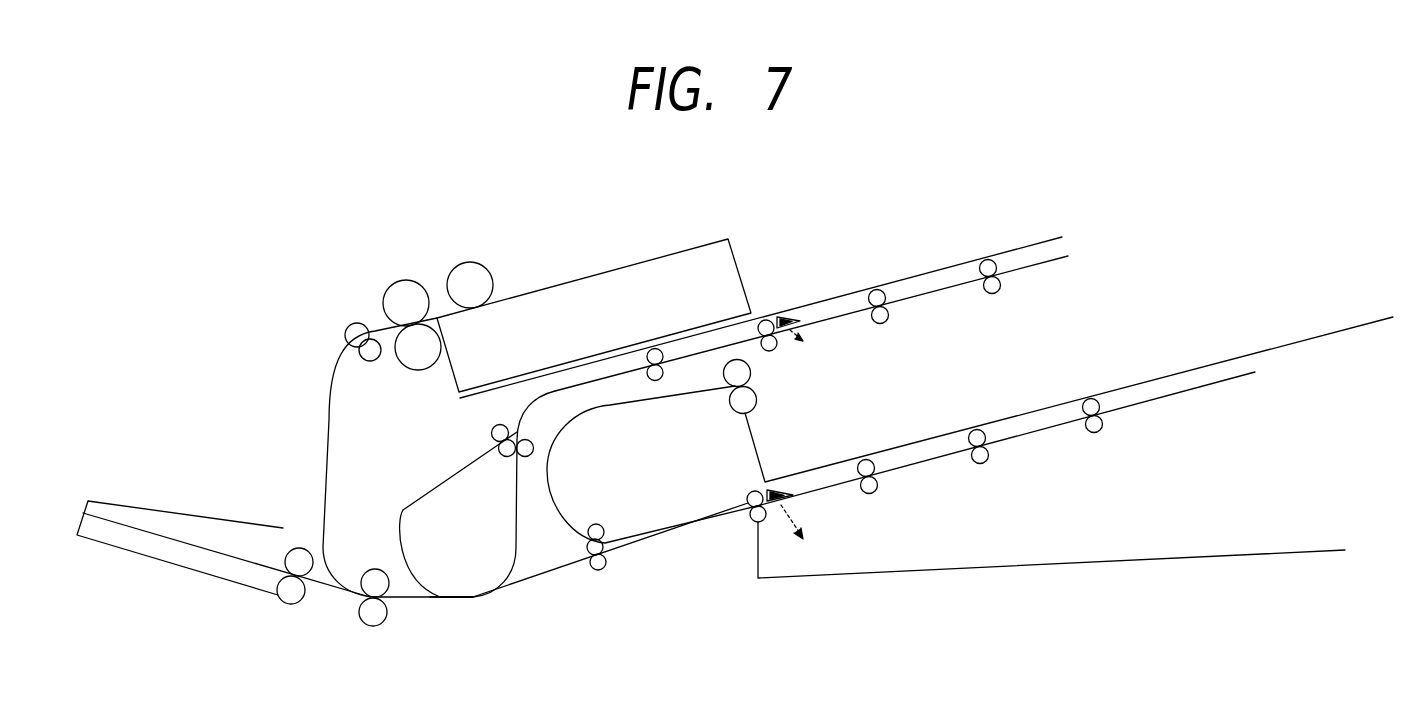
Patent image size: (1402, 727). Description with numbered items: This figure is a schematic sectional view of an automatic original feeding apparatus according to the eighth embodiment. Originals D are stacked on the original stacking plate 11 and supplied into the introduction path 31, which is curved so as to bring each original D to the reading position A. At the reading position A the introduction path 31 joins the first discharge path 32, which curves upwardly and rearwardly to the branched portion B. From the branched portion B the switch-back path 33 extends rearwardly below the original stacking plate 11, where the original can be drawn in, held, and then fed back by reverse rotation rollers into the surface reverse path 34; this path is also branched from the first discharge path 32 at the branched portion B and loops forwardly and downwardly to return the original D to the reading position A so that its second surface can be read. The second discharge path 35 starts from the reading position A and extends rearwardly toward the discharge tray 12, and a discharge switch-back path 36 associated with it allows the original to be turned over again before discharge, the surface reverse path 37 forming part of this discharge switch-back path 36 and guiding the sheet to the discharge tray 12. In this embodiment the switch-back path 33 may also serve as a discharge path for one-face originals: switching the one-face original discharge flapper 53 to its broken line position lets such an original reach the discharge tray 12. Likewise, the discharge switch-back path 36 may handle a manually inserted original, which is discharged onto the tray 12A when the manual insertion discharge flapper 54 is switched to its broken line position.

The original stacking plate 11 is at (836, 295).
The discharge tray 12 is at (842, 453).
The tray 12A is at (978, 567).
The introduction path 31 is at (327, 452).
The first discharge path 32 is at (500, 573).
The switch-back path 33 is at (860, 320).
The surface reverse path 34 is at (443, 486).
The second discharge path 35 is at (557, 568).
The discharge switch-back path 36 is at (937, 462).
The surface reverse path 37 is at (553, 495).
The one-face original discharge flapper 53 is at (791, 315).
The manual insertion discharge flapper 54 is at (789, 531).
The reading position A is at (473, 597).
The branched portion B is at (513, 430).
The original D is at (580, 293).